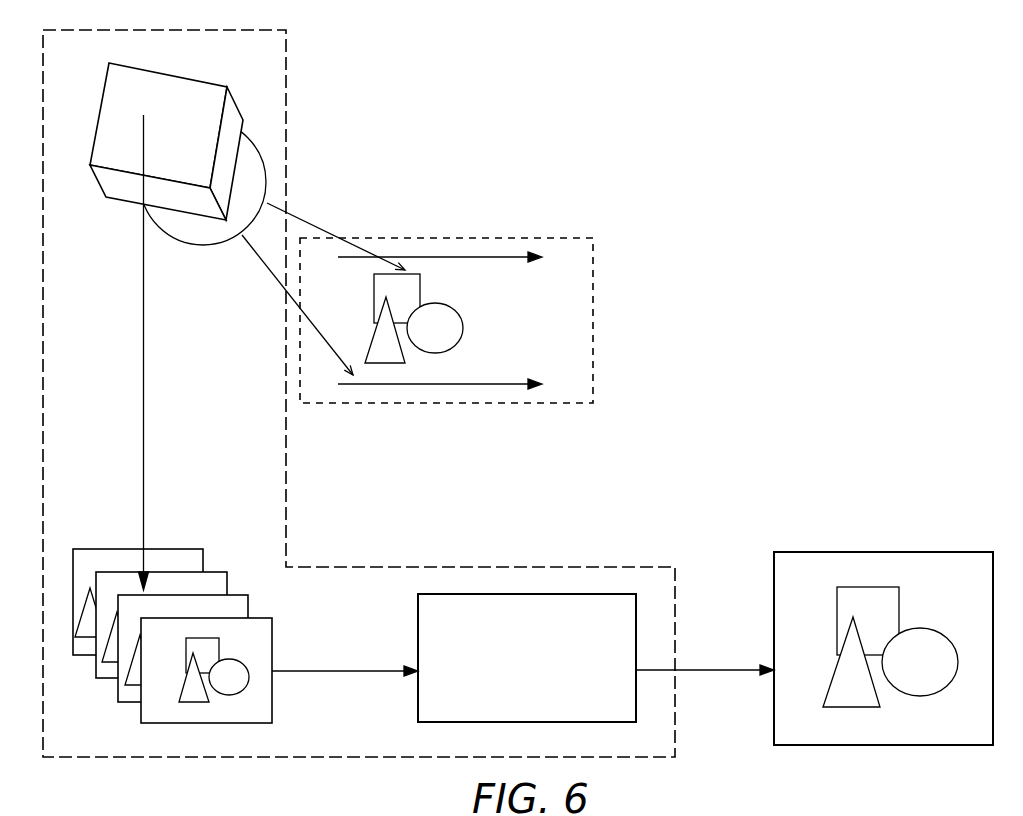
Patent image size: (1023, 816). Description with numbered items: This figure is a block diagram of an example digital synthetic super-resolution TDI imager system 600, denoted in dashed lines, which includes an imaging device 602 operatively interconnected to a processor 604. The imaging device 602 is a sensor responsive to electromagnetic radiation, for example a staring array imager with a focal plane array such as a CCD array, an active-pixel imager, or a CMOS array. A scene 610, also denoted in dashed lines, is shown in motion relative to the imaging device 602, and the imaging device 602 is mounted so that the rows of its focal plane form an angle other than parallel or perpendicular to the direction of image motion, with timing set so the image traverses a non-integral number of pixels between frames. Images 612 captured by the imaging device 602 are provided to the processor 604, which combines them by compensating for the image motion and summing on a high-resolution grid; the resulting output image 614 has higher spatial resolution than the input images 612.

The digital synthetic super-resolution TDI imager system 600 is at (286, 178).
The imaging device 602 is at (236, 118).
The processor 604 is at (513, 594).
The scene 610 is at (450, 238).
The images 612 is at (249, 569).
The output image 614 is at (850, 552).